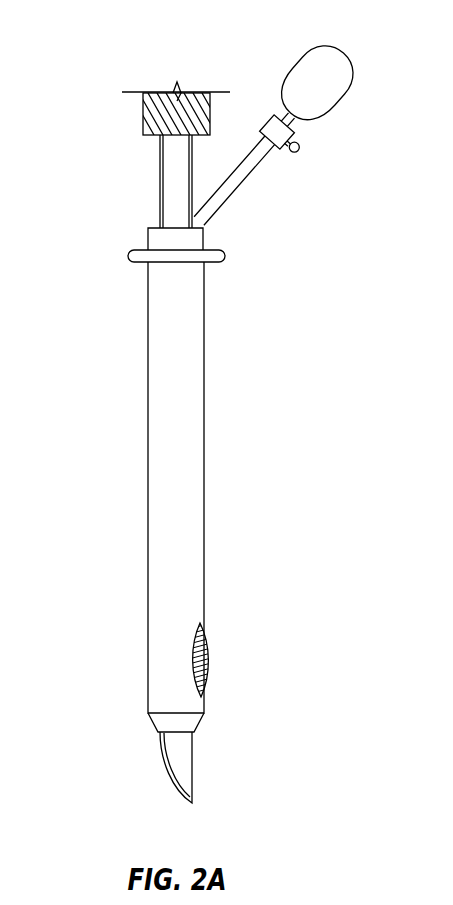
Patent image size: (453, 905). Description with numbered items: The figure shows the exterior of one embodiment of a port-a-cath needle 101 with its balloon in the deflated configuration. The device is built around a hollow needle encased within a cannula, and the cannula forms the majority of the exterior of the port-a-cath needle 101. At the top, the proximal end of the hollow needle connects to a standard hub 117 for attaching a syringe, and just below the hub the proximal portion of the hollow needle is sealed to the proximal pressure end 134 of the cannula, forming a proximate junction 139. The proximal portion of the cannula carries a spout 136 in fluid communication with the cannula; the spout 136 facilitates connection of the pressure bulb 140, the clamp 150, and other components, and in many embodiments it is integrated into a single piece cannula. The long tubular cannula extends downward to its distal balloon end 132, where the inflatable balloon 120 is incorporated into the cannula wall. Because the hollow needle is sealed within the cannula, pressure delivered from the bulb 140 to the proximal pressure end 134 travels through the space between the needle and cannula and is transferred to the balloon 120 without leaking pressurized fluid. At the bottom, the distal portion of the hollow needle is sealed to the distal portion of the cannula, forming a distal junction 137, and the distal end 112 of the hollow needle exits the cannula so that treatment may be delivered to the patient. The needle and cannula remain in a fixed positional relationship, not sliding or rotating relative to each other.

The port-a-cath needle 101 is at (120, 50).
The standard hub 117 is at (142, 117).
The proximate junction 139 is at (152, 228).
The proximal pressure end 134 is at (148, 332).
The distal balloon end 132 is at (148, 678).
The inflatable balloon 120 is at (206, 660).
The distal junction 137 is at (202, 725).
The distal end 112 is at (160, 742).
The spout 136 is at (238, 192).
The clamp 150 is at (304, 153).
The bulb 140 is at (293, 92).